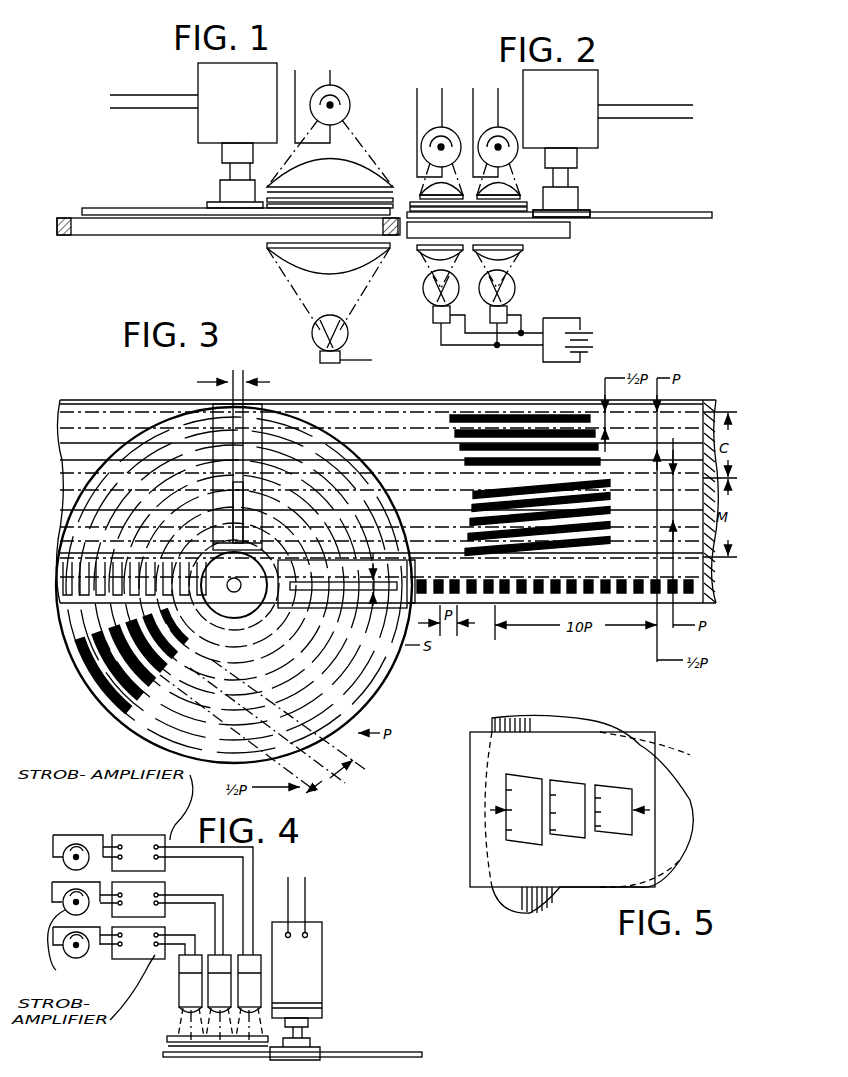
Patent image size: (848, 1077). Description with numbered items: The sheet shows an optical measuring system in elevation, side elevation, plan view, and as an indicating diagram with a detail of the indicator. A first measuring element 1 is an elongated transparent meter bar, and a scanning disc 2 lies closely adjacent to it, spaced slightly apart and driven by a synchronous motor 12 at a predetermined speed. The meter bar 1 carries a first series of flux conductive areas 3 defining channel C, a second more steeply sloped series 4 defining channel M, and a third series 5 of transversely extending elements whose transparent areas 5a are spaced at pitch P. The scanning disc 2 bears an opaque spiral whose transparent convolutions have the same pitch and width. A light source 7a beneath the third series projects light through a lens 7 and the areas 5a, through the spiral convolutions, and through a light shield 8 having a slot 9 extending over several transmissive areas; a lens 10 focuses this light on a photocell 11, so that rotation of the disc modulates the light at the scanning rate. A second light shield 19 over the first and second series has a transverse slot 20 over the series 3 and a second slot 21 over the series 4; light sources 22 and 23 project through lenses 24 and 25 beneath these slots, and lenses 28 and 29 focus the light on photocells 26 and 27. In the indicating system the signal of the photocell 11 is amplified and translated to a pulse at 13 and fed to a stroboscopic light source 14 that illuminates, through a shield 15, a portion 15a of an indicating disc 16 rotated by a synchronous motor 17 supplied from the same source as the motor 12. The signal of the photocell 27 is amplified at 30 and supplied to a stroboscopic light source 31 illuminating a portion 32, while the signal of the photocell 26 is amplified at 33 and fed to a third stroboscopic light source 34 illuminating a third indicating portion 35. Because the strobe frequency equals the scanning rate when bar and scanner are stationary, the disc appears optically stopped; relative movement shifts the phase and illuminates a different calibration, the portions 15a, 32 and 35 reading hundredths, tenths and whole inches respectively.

In FIG. 1, the first measuring element 1 is at (125, 235).
In FIG. 2, the first measuring element 1 is at (562, 232).
In FIG. 1, the scanning disc 2 is at (146, 208).
In FIG. 2, the scanning disc 2 is at (685, 222).
In FIG. 3, the first series of flux conductive areas 3 is at (450, 406).
In FIG. 3, the second series of flux conductive elements 4 is at (703, 562).
In FIG. 3, the third series of flux conductive elements 5 is at (520, 580).
In FIG. 3, the light flux conductive areas 5a is at (611, 579).
In FIG. 1, the lens 7 is at (270, 245).
In FIG. 1, the light source 7a is at (340, 342).
In FIG. 1, the light shield 8 is at (386, 200).
In FIG. 2, the light shield 8 is at (468, 206).
In FIG. 3, the light shield 8 is at (414, 570).
In FIG. 3, the slot 9 is at (360, 600).
In FIG. 1, the lens 10 is at (338, 170).
In FIG. 1, the photocell 11 is at (345, 95).
In FIG. 4, the photocell 11 is at (80, 835).
In FIG. 1, the synchronous motor 12 is at (234, 103).
In FIG. 2, the synchronous motor 12 is at (563, 109).
In FIG. 4, the amplifier 13 is at (135, 835).
In FIG. 4, the stroboscopic light source 14 is at (255, 952).
In FIG. 4, the shield 15 is at (170, 1038).
In FIG. 5, the shield 15 is at (475, 862).
In FIG. 5, the portion of indicating disc 15a is at (603, 835).
In FIG. 4, the indicating disc 16 is at (342, 1052).
In FIG. 5, the indicating disc 16 is at (516, 905).
In FIG. 4, the synchronous motor 17 is at (315, 960).
In FIG. 2, the second light shield 19 is at (560, 208).
In FIG. 3, the second light shield 19 is at (216, 408).
In FIG. 3, the slot 20 is at (262, 432).
In FIG. 3, the second slot 21 is at (243, 517).
In FIG. 2, the light source 22 is at (433, 300).
In FIG. 2, the light source 23 is at (512, 300).
In FIG. 2, the lens 24 is at (427, 250).
In FIG. 2, the lens 25 is at (515, 250).
In FIG. 2, the photocell 26 is at (432, 132).
In FIG. 2, the photocell 27 is at (505, 128).
In FIG. 4, the photocell 27 is at (53, 955).
In FIG. 2, the lens 28 is at (448, 182).
In FIG. 4, the lens 28 is at (77, 945).
In FIG. 2, the lens 29 is at (520, 196).
In FIG. 4, the amplifier 30 is at (148, 888).
In FIG. 4, the stroboscopic light source 31 is at (226, 952).
In FIG. 5, the portion of indicating disc 32 is at (578, 838).
In FIG. 4, the amplifier 33 is at (125, 958).
In FIG. 4, the third stroboscopic light source 34 is at (180, 978).
In FIG. 5, the third indicating portion 35 is at (508, 845).